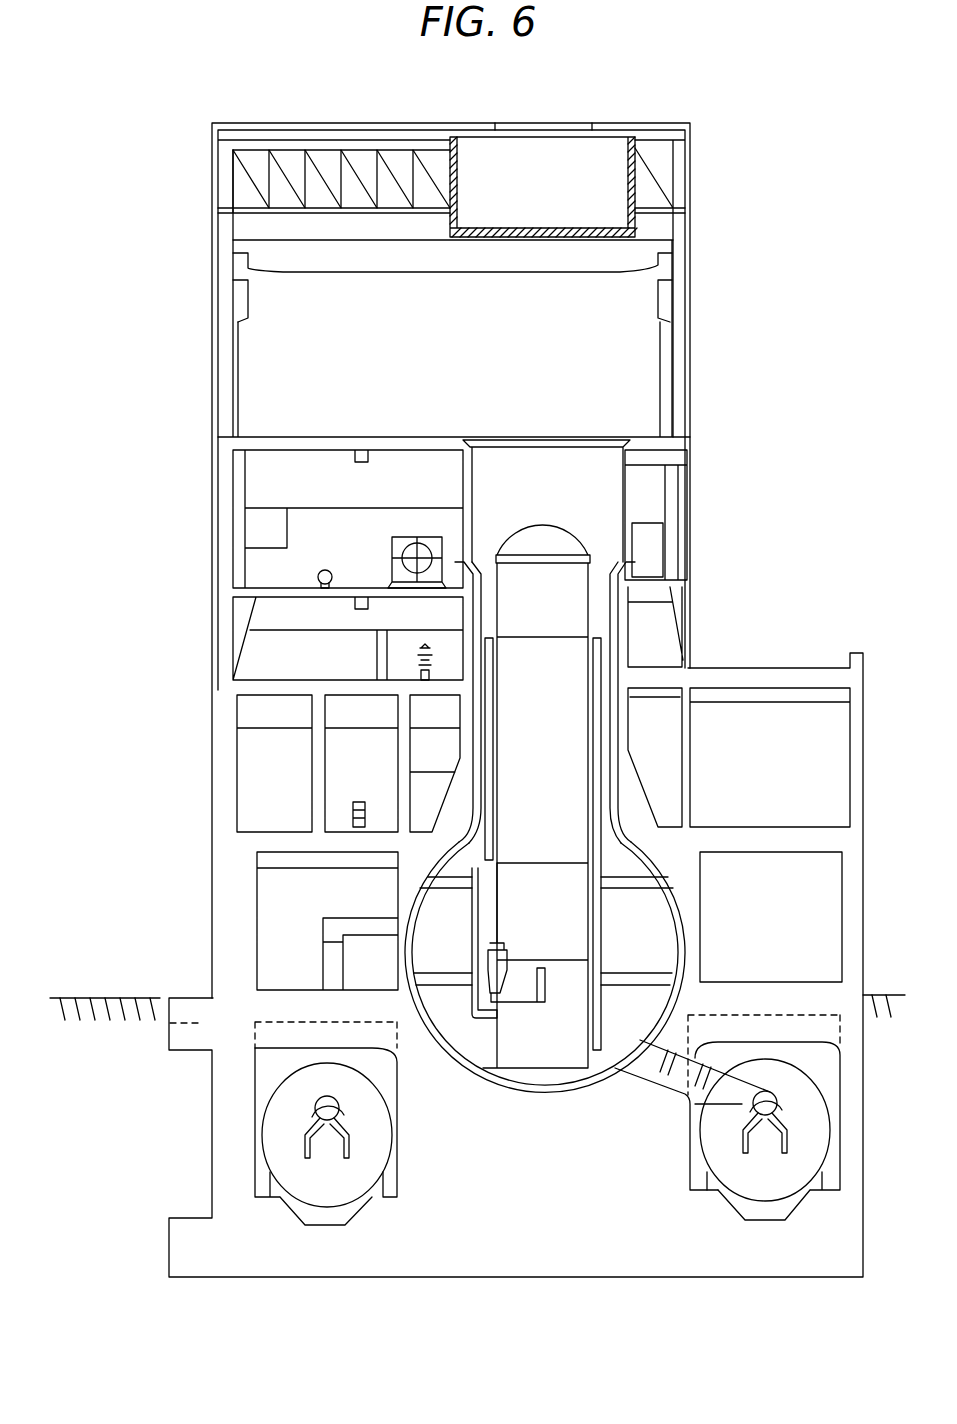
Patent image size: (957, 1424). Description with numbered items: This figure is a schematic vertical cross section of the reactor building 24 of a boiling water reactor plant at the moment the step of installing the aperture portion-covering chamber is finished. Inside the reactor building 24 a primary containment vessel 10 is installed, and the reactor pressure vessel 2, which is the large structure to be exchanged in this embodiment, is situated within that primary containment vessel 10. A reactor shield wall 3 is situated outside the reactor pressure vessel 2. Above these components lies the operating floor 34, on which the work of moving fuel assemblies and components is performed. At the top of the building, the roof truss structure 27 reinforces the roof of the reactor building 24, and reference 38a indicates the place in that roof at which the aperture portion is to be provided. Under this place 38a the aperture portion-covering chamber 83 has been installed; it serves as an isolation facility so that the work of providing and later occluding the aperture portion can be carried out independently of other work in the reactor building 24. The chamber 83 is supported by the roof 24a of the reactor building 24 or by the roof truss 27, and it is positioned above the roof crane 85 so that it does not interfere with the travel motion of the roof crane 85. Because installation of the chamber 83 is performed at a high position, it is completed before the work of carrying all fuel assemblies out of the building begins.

The reactor pressure vessel 2 is at (590, 608).
The reactor shield wall 3 is at (588, 704).
The primary containment vessel 10 is at (645, 852).
The reactor building 24 is at (690, 258).
The roof 24a is at (233, 150).
The roof truss structure 27 is at (360, 162).
The operating floor 34 is at (652, 446).
The place at which the aperture portion is provided 38a is at (533, 123).
The aperture portion-covering chamber 83 is at (635, 170).
The roof crane 85 is at (665, 237).